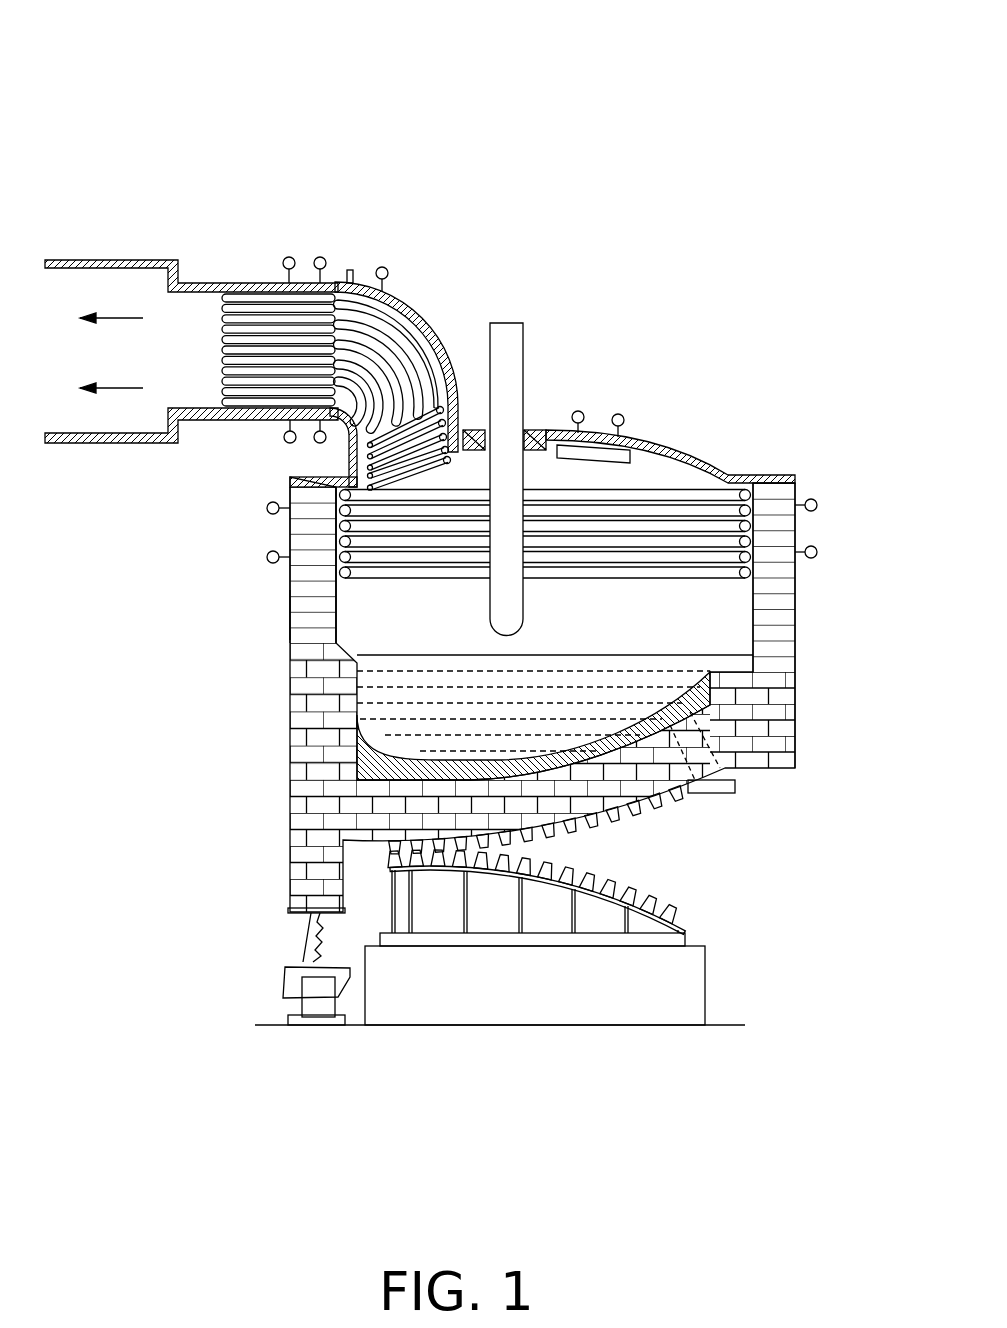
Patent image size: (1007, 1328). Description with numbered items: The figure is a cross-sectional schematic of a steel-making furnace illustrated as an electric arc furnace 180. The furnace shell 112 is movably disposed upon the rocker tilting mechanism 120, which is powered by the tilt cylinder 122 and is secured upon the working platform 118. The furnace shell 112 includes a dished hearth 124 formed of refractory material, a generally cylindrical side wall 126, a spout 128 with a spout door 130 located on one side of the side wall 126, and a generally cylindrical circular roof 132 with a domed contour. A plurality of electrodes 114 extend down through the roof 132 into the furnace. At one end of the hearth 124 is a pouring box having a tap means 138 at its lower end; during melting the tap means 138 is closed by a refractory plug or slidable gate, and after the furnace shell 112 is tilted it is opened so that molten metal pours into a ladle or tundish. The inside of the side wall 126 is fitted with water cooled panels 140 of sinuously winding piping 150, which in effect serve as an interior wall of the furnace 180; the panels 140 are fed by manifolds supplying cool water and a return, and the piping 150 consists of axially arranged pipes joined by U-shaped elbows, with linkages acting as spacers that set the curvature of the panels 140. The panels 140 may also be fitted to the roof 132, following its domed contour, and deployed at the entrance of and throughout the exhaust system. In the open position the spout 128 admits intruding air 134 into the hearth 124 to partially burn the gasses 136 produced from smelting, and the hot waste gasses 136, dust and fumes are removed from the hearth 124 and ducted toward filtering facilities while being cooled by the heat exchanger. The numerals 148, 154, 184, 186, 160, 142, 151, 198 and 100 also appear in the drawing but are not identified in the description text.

The electric arc furnace 180 is at (795, 69).
The gasses 136 is at (113, 318).
The exhaust duct 148 is at (85, 445).
The connector post 154 is at (349, 272).
The cooling fluid inlet connector 184 is at (318, 257).
The cooling fluid outlet connector 186 is at (287, 257).
The electrodes 114 is at (505, 322).
The elbow duct 160 is at (450, 363).
The roof block 142 is at (535, 430).
The sensor 151 is at (595, 432).
The roof 132 is at (690, 428).
The piping 150 is at (750, 490).
The furnace shell 112 is at (797, 520).
The side wall 126 is at (559, 696).
The water cooled panels 140 is at (615, 540).
The spout door 130 is at (289, 598).
The spout 128 is at (288, 607).
The intruding air 134 is at (300, 624).
The molten bath 198 is at (368, 686).
The hearth lining 100 is at (358, 732).
The hearth 124 is at (333, 805).
The tap means 138 is at (735, 790).
The rocker tilting mechanism 120 is at (685, 898).
The working platform 118 is at (705, 990).
The tilt cylinder 122 is at (305, 940).